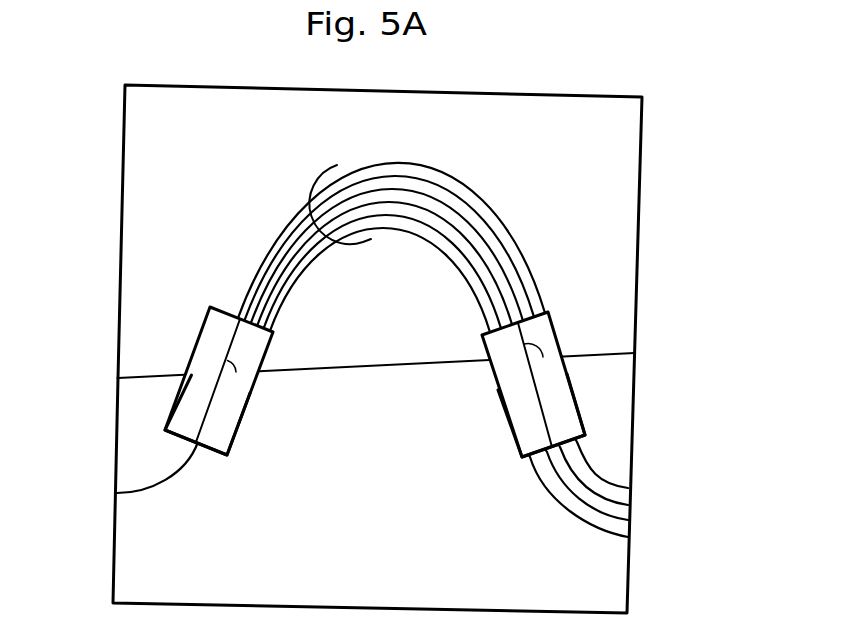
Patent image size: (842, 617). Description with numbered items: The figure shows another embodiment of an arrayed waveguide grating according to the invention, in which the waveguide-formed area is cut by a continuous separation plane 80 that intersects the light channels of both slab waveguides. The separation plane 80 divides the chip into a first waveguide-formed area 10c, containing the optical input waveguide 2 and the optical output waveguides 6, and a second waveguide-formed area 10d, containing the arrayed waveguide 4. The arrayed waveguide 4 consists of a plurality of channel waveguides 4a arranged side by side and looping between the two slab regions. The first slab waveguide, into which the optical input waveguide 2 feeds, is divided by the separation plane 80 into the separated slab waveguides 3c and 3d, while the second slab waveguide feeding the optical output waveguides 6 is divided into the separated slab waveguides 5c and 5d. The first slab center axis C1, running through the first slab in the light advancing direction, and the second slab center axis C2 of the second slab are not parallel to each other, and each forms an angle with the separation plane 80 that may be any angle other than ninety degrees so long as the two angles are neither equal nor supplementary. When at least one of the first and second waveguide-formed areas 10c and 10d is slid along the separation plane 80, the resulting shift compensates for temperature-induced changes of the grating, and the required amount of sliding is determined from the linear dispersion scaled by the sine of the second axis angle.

The second waveguide-formed area 10d is at (622, 165).
The first waveguide-formed area 10c is at (608, 578).
The separation plane 80 is at (592, 355).
The arrayed waveguide 4 is at (313, 177).
The channel waveguide 4a is at (430, 170).
The optical input waveguide 2 is at (150, 488).
The optical output waveguide 6 is at (600, 474).
The separated slab waveguide 3d is at (207, 331).
The separated slab waveguide 3c is at (177, 413).
The separated slab waveguide 5d is at (548, 313).
The separated slab waveguide 5c is at (577, 424).
The first slab center axis C1 is at (207, 410).
The second slab center axis C2 is at (540, 407).